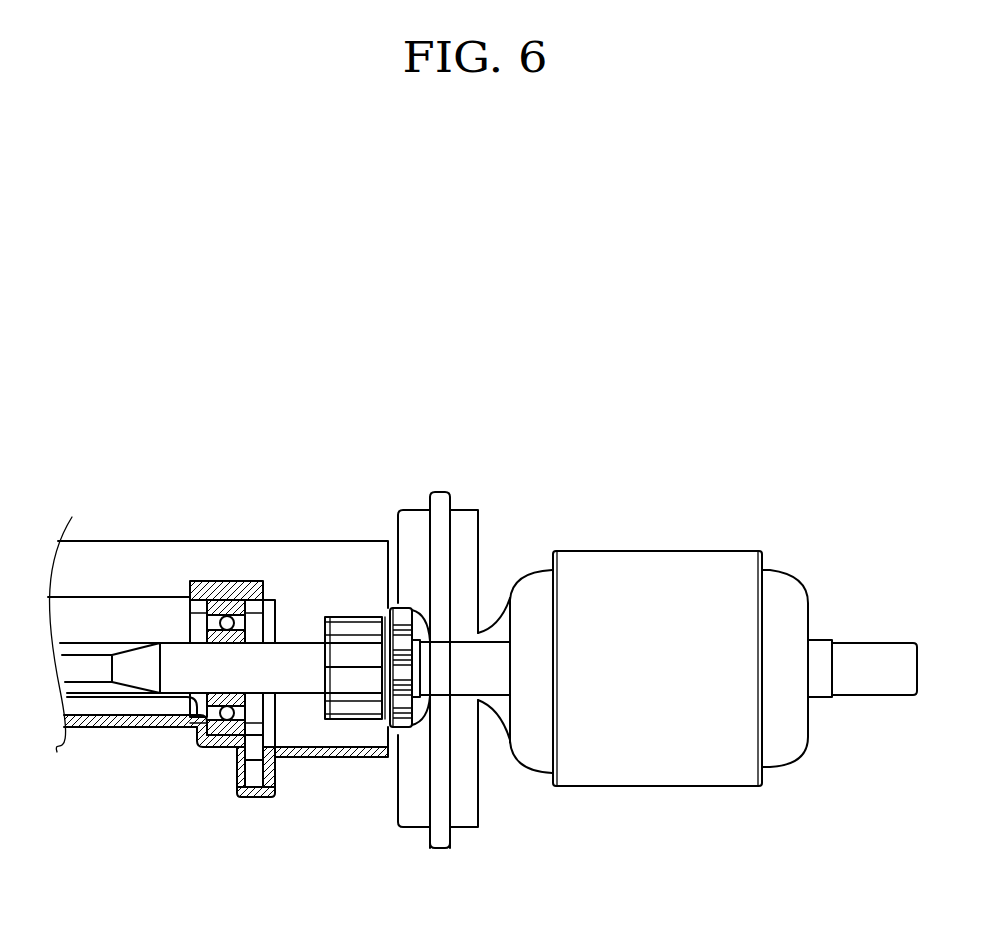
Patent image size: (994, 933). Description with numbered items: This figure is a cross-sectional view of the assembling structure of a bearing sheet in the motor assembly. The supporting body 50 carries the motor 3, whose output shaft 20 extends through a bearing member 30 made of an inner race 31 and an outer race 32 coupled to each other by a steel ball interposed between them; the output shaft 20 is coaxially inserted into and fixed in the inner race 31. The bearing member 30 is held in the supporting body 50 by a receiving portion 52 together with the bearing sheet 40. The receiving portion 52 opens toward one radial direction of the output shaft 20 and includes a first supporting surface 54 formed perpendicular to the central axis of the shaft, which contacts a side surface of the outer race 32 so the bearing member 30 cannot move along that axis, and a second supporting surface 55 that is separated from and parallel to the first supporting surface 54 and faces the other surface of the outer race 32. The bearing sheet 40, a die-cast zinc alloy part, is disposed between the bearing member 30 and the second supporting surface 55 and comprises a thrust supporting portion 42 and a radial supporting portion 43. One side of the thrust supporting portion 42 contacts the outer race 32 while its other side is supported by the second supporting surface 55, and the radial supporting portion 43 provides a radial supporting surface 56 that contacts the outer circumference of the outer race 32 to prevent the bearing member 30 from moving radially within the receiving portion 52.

The motor 3 is at (685, 522).
The output shaft 20 is at (112, 698).
The bearing member 30 is at (176, 586).
The inner race 31 is at (203, 635).
The outer race 32 is at (188, 606).
The bearing sheet 40 is at (262, 574).
The thrust supporting portion 42 is at (257, 733).
The radial supporting portion 43 is at (255, 582).
The supporting body 50 is at (76, 733).
The receiving portion 52 is at (257, 812).
The first supporting surface 54 is at (200, 748).
The second supporting surface 55 is at (273, 797).
The radial supporting surface 56 is at (253, 777).